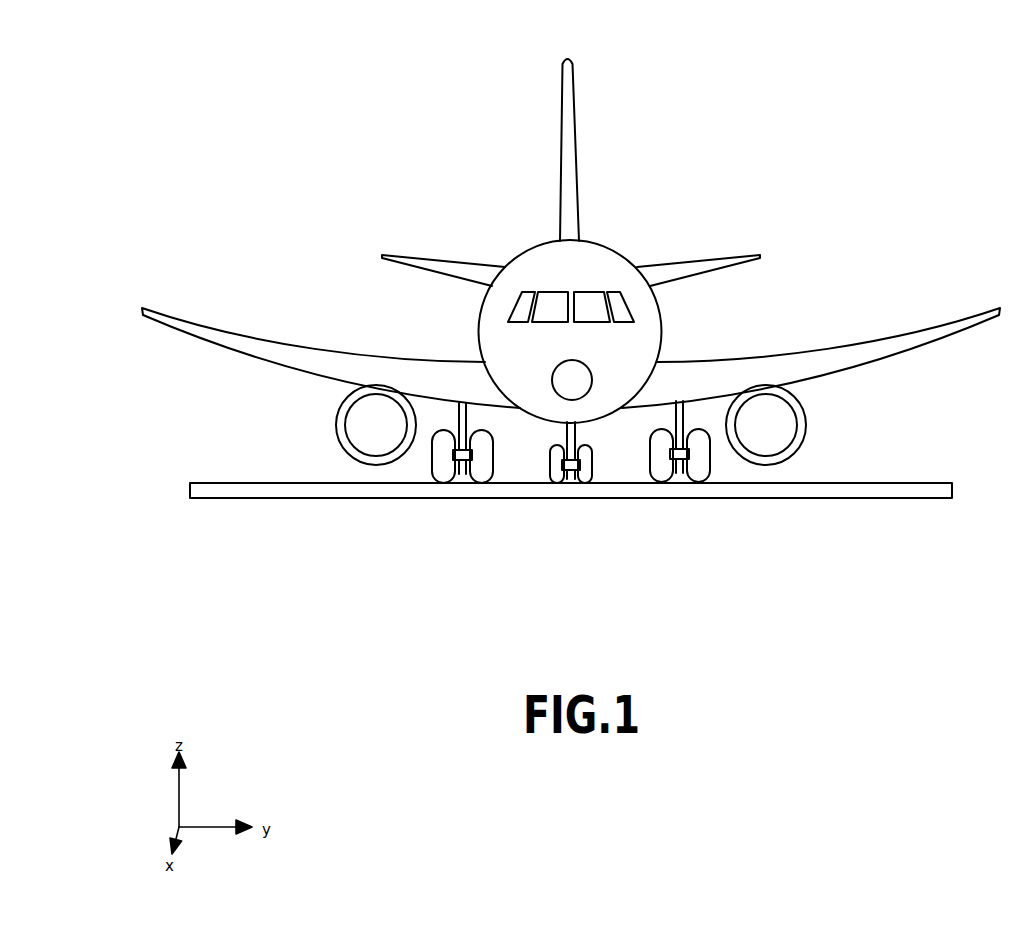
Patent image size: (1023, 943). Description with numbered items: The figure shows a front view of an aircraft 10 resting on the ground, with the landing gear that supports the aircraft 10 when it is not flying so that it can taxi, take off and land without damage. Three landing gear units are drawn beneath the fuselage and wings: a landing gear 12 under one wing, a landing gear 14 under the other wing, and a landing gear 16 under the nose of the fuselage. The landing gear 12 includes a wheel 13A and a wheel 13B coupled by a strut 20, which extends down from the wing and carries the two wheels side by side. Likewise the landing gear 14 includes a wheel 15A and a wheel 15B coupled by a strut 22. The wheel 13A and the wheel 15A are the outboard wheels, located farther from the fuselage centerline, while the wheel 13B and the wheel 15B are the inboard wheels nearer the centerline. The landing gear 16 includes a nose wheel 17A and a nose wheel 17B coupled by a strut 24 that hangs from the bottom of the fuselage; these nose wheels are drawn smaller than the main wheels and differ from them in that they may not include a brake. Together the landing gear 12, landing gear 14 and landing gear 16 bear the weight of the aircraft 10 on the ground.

The aircraft 10 is at (397, 142).
The landing gear 12 is at (733, 468).
The wheel 13A is at (710, 464).
The wheel 13B is at (667, 427).
The landing gear 14 is at (412, 466).
The wheel 15A is at (433, 480).
The wheel 15B is at (492, 481).
The landing gear 16 is at (614, 436).
The nose wheel 17A is at (592, 478).
The nose wheel 17B is at (551, 482).
The strut 20 is at (678, 462).
The strut 22 is at (458, 472).
The strut 24 is at (568, 478).